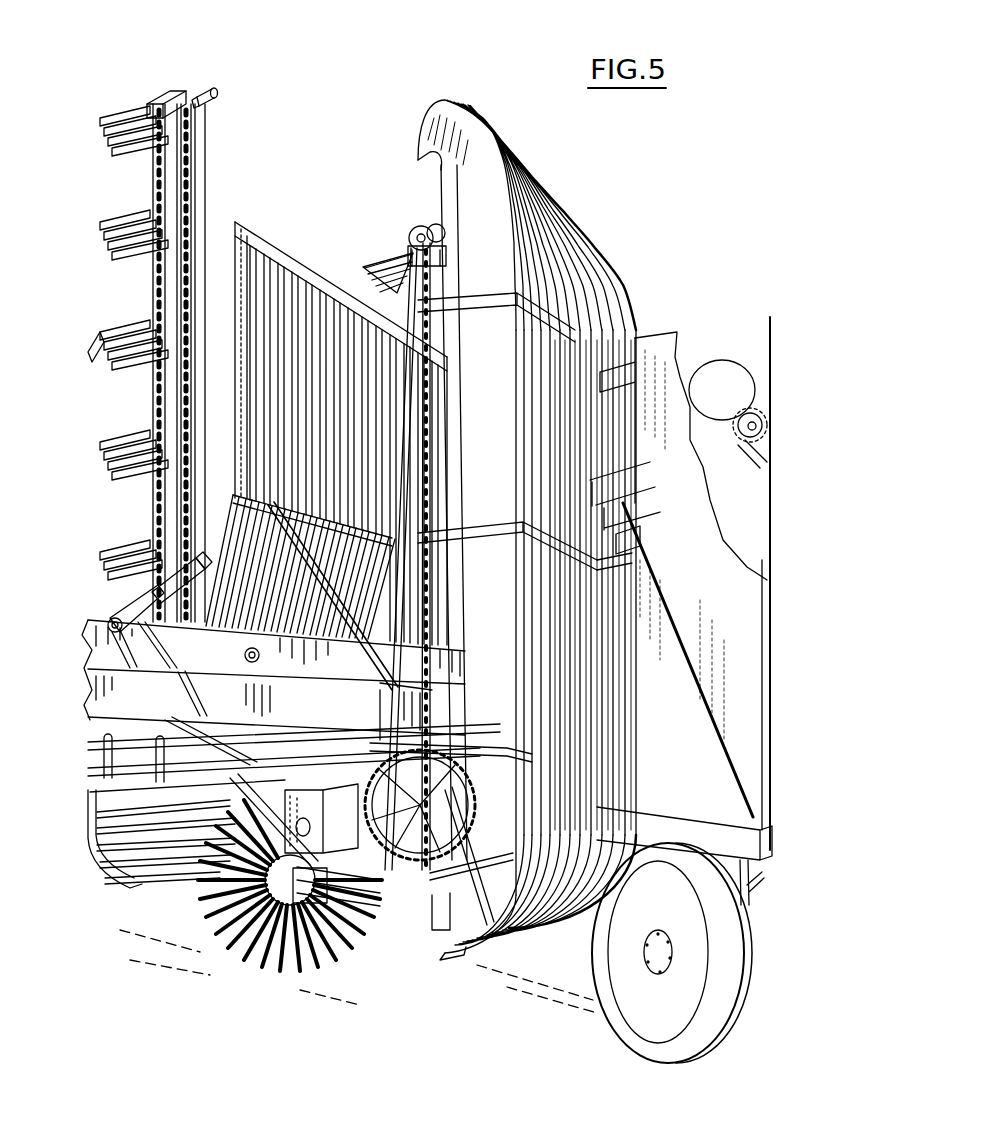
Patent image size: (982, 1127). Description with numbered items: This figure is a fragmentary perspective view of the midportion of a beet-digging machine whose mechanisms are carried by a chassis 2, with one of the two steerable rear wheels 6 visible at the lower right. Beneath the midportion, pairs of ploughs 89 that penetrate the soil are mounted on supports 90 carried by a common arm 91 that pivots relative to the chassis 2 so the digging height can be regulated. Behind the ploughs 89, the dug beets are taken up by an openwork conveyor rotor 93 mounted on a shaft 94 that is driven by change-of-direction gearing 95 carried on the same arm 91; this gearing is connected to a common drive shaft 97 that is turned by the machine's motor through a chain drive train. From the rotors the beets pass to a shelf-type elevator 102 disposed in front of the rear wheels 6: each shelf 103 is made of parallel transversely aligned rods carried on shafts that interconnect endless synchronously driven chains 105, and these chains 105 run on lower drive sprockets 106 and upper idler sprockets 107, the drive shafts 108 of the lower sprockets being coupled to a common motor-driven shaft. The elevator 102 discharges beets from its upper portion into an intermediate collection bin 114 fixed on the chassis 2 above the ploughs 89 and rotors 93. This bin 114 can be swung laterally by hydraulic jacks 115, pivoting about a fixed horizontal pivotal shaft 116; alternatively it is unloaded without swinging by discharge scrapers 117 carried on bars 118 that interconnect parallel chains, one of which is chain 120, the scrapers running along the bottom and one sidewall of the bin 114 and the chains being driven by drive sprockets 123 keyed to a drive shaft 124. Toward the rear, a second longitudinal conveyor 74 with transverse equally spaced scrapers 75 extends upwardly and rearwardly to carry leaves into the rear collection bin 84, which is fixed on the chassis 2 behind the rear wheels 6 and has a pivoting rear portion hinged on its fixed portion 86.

The chassis 2 is at (126, 702).
The rear wheels 6 is at (616, 948).
The second longitudinal conveyor 74 is at (763, 480).
The transverse scrapers 75 is at (755, 480).
The rear collection bin 84 is at (658, 350).
The fixed portion 86 is at (737, 700).
The ploughs 89 is at (133, 890).
The supports 90 is at (160, 804).
The arm 91 is at (166, 817).
The conveyor rotors 93 is at (314, 957).
The shaft 94 is at (253, 946).
The change-of-direction gearing 95 is at (300, 809).
The common drive shaft 97 is at (186, 912).
The elevators 102 is at (612, 265).
The shelf 103 is at (397, 266).
The chains 105 is at (390, 310).
The lower drive sprockets 106 is at (470, 752).
The upper idler sprockets 107 is at (444, 218).
The drive shafts 108 is at (464, 820).
The intermediate collection bin 114 is at (212, 192).
The hydraulic jacks 115 is at (142, 592).
The horizontal pivotal shaft 116 is at (260, 657).
The discharge scrapers 117 is at (104, 340).
The bars 118 is at (100, 362).
The chain 120 is at (154, 182).
The drive sprockets 123 is at (183, 92).
The drive shaft 124 is at (208, 92).